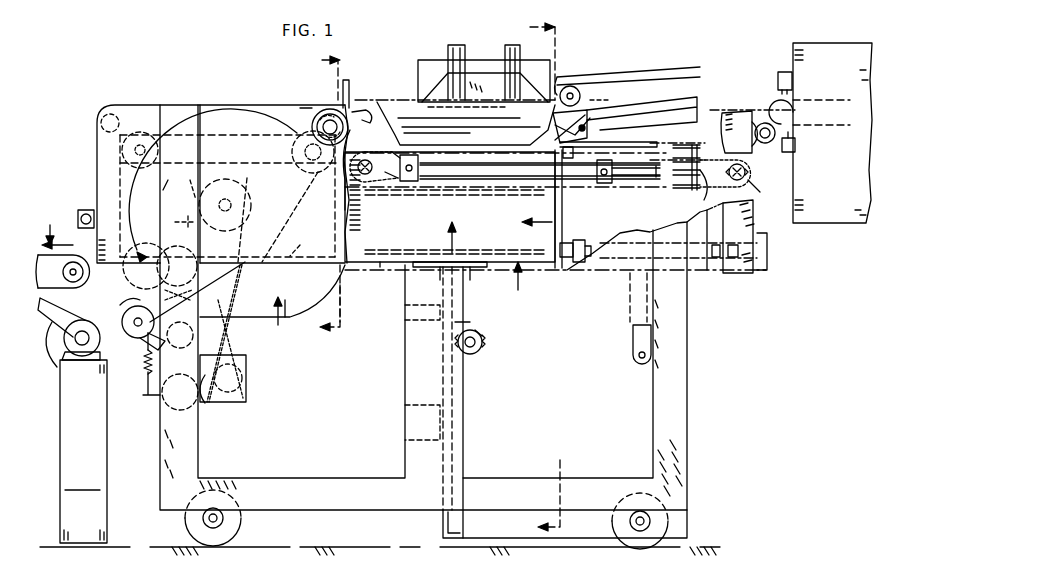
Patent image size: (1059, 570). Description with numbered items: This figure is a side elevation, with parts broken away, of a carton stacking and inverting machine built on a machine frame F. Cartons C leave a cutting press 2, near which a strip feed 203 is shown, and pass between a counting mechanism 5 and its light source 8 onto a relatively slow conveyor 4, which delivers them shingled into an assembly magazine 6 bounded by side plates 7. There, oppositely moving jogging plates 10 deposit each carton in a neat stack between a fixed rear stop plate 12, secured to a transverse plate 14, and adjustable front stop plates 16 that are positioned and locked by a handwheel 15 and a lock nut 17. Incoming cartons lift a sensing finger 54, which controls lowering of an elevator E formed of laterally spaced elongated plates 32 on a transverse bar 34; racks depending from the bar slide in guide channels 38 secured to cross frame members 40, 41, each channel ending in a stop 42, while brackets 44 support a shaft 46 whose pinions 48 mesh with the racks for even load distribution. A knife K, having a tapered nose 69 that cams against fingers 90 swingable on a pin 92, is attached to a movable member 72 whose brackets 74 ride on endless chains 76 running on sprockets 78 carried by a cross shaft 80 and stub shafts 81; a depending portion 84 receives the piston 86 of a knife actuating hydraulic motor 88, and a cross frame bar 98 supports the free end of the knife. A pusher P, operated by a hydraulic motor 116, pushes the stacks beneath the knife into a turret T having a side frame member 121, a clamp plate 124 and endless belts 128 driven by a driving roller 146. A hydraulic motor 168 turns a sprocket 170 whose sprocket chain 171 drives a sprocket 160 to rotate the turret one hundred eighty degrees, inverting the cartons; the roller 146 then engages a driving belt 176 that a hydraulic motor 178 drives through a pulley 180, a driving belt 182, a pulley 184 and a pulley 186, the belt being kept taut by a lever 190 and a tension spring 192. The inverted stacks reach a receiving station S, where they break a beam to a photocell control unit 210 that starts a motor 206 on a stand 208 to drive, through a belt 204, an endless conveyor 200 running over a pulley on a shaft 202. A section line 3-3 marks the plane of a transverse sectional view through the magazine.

The cutting press 2 is at (838, 212).
The section line 3- 3 is at (537, 278).
The conveyor 4 is at (645, 118).
The counting mechanism 5 is at (783, 72).
The assembly magazine 6 is at (393, 102).
The side plates 7 is at (100, 157).
The light source 8 is at (795, 147).
The jogging plates 10 is at (432, 68).
The fixed rear stop plate 12 is at (562, 115).
The transverse plate 14 is at (590, 118).
The handwheel 15 is at (330, 110).
The adjustable front stop plates 16 is at (348, 80).
The lock nut 17 is at (315, 110).
The elongated plates 32 is at (388, 262).
The transverse bar 34 is at (475, 270).
The guide channels 38 is at (465, 390).
The cross frame member 40 is at (410, 314).
The cross frame member 41 is at (418, 424).
The stop 42 is at (460, 533).
The brackets 44 is at (470, 322).
The shaft 46 is at (473, 352).
The pinions 48 is at (485, 345).
The sensing finger 54 is at (361, 160).
The tapered nose 69 is at (560, 135).
The movable member 72 is at (712, 128).
The brackets 74 is at (687, 155).
The endless chains 76 is at (750, 160).
The sprockets 78 is at (397, 180).
The cross shaft 80 is at (748, 185).
The stub shafts 81 is at (368, 175).
The depending portion 84 is at (710, 188).
The piston 86 is at (645, 178).
The knife actuating hydraulic motor 88 is at (482, 170).
The fingers 90 is at (555, 128).
The pin 92 is at (586, 128).
The cross frame bar 98 is at (570, 158).
The hydraulic motor 116 is at (586, 248).
The side frame member 121 is at (295, 293).
The plate 124 is at (309, 242).
The endless belts 128 is at (228, 135).
The driving roller 146 is at (150, 255).
The sprocket 160 is at (250, 222).
The hydraulic motor 168 is at (172, 420).
The sprocket 170 is at (203, 405).
The sprocket chain 171 is at (238, 297).
The driving belt 176 is at (122, 322).
The hydraulic motor 178 is at (246, 380).
The pulley 180 is at (246, 415).
The driving belt 182 is at (228, 350).
The pulley 184 is at (179, 188).
The pulley 186 is at (179, 213).
The lever 190 is at (197, 330).
The tension spring 192 is at (143, 382).
The endless conveyor 200 is at (124, 300).
The shaft 202 is at (68, 288).
The strip feed 203 is at (75, 262).
The belt 204 is at (83, 451).
The motor 206 is at (98, 344).
The stand 208 is at (82, 481).
The photocell control unit 210 is at (82, 210).
The cartons C is at (655, 90).
The elevator E is at (517, 289).
The machine frame F is at (690, 385).
The knife K is at (625, 142).
The pusher P is at (560, 218).
The receiving station S is at (48, 225).
The turret T is at (277, 325).